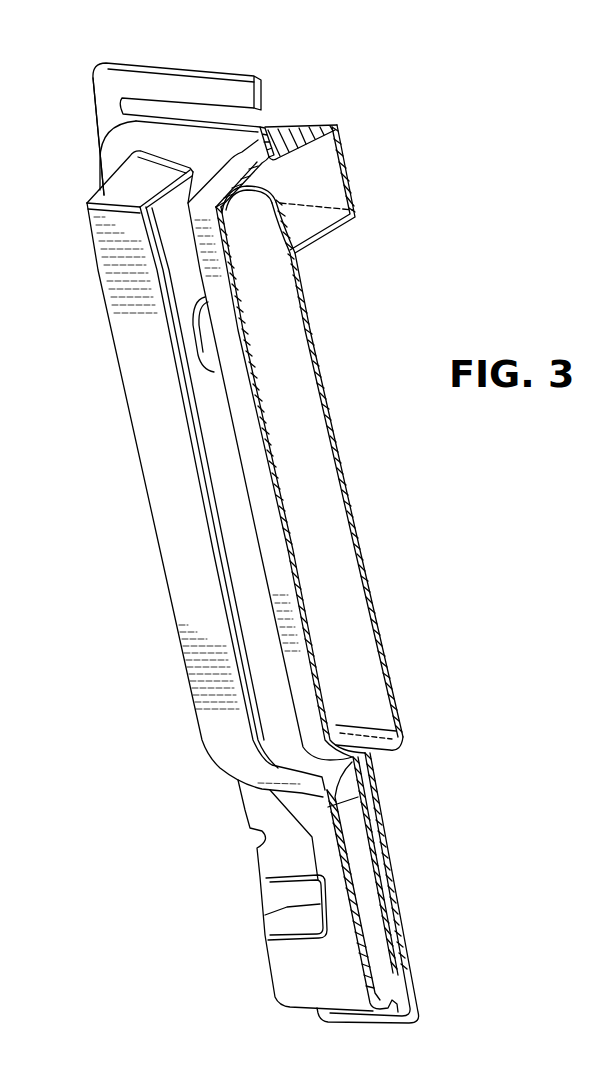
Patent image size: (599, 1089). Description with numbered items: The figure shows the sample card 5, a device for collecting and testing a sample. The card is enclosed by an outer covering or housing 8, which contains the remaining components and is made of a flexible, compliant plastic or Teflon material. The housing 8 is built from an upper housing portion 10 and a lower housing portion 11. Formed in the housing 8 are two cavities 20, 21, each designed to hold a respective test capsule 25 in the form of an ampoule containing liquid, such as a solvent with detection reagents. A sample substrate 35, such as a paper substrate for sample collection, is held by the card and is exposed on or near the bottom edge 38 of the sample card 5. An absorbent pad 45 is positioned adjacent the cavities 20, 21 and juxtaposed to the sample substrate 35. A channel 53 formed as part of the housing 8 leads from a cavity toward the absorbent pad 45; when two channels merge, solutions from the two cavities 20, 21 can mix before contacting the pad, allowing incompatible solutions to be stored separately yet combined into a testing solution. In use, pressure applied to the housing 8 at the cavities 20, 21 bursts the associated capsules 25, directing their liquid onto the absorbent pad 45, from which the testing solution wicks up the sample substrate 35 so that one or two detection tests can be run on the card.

The sample card 5 is at (392, 127).
The housing 8 is at (100, 166).
The upper housing portion 10 is at (203, 158).
The cavity 20 is at (150, 418).
The cavity 21 is at (232, 353).
The test capsule 25 is at (282, 238).
The channel 53 is at (293, 797).
The absorbent pad 45 is at (363, 877).
The sample substrate 35 is at (407, 955).
The bottom edge 38 is at (317, 1015).
The lower housing portion 11 is at (287, 858).